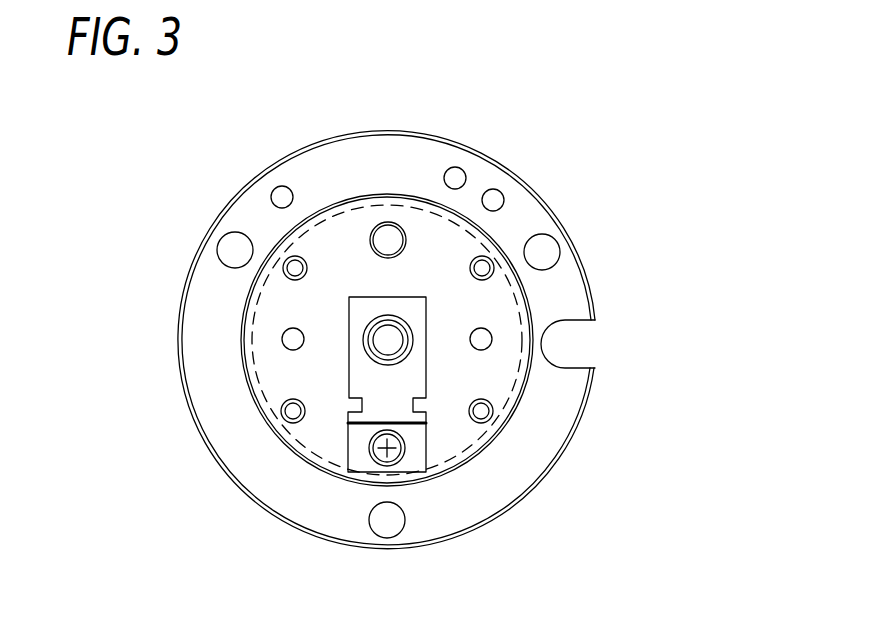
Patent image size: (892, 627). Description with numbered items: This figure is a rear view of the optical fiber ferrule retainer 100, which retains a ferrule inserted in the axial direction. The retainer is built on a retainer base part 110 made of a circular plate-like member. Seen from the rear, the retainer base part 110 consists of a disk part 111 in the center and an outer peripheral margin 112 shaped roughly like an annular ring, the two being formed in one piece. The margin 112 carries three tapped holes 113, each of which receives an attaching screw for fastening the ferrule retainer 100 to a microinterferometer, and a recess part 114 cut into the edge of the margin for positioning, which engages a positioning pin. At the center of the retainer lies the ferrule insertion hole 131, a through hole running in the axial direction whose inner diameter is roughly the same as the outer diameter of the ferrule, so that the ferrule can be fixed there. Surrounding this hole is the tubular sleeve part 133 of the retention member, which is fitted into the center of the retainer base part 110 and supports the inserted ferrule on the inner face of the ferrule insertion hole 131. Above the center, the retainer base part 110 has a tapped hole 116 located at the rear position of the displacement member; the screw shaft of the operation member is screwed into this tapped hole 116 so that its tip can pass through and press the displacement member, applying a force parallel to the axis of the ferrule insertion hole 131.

The ferrule retainer 100 is at (294, 126).
The retainer base part 110 is at (543, 191).
The disk part 111 is at (403, 218).
The outer peripheral margin 112 is at (540, 463).
The tapped holes 113 is at (230, 248).
The recess part 114 is at (575, 366).
The tapped hole 116 is at (395, 243).
The ferrule insertion hole 131 is at (397, 343).
The sleeve part 133 is at (372, 353).